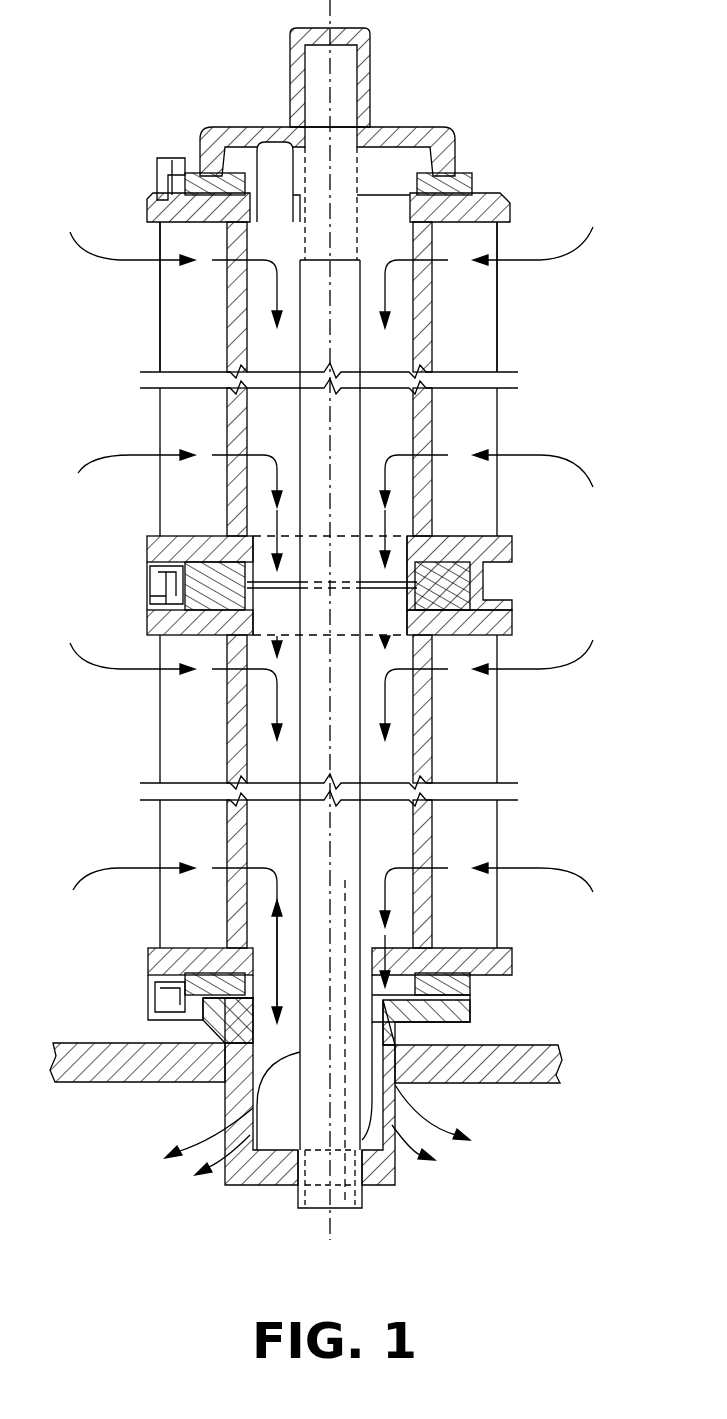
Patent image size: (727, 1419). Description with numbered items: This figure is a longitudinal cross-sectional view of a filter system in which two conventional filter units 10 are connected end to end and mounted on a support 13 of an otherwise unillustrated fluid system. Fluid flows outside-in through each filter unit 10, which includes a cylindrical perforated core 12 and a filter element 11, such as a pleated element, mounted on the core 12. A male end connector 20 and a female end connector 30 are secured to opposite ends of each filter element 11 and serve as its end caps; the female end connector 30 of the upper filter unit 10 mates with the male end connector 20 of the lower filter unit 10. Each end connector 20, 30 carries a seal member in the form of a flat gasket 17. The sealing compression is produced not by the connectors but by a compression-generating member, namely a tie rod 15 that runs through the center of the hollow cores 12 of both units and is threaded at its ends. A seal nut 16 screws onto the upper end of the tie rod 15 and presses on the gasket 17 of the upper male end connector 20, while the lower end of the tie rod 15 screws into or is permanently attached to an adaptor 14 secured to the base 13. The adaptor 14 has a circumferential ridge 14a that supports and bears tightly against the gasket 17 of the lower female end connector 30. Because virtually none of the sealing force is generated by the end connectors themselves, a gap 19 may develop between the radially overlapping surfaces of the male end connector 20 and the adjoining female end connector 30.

The filter unit 10 is at (500, 330).
The filter element 11 is at (486, 356).
The cylindrical perforated core 12 is at (432, 325).
The support 13 is at (545, 1083).
The adaptor 14 is at (470, 1035).
The circumferential ridge 14a is at (500, 1005).
The tie rod 15 is at (362, 428).
The seal nut 16 is at (466, 140).
The flat gasket 17 is at (470, 182).
The gap 19 is at (153, 585).
The male end connector 20 is at (510, 210).
The female end connector 30 is at (512, 550).